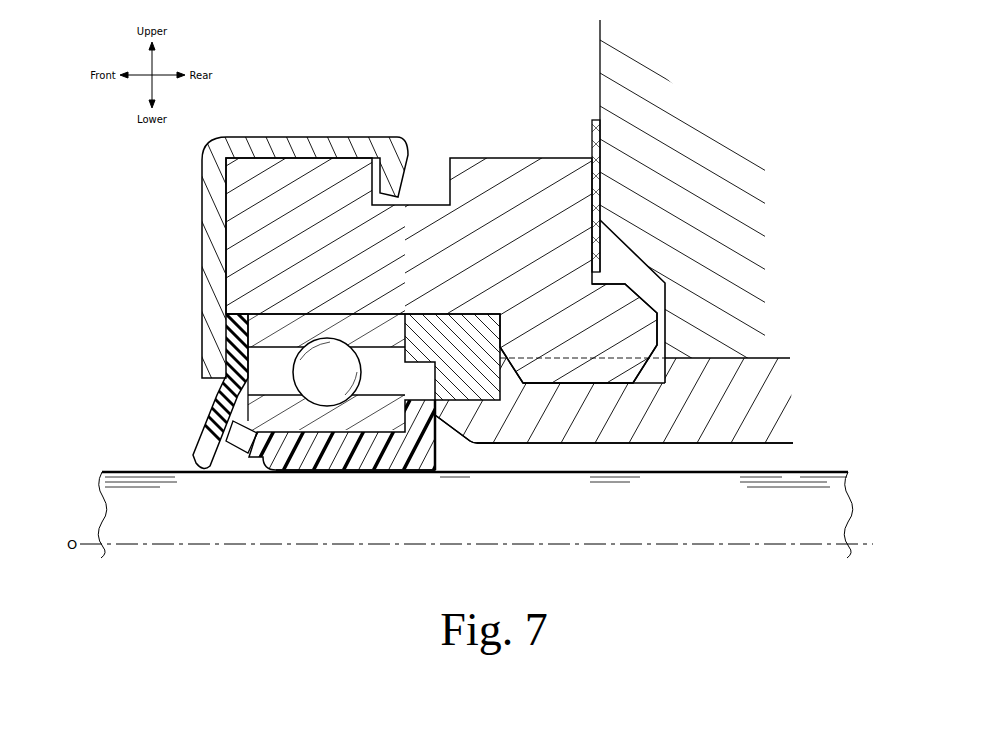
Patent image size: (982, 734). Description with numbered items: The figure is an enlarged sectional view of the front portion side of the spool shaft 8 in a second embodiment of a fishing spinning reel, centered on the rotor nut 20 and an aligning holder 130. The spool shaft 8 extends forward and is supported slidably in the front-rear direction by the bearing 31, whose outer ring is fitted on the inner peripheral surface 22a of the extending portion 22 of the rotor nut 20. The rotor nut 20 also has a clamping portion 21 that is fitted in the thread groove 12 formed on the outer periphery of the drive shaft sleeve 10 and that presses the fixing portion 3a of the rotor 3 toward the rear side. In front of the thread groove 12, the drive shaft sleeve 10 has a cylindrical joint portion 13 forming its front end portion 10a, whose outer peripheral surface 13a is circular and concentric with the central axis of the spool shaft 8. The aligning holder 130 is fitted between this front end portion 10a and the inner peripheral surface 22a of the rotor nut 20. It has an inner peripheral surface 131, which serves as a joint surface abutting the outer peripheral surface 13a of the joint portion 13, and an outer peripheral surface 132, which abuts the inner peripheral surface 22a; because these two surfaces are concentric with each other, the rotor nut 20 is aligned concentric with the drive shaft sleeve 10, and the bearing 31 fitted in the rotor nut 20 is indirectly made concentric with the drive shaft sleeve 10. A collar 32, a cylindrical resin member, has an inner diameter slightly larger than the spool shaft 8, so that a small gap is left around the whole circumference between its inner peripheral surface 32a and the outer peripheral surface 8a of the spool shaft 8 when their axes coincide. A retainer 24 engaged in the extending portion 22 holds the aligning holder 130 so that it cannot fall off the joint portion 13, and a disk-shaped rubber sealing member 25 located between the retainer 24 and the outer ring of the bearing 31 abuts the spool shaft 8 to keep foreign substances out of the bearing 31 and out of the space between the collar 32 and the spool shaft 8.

The rotor 3 is at (681, 228).
The fixing portion 3a is at (703, 203).
The spool shaft 8 is at (475, 495).
The outer peripheral surface of the spool shaft 8a is at (157, 470).
The drive shaft sleeve 10 is at (638, 427).
The front end portion of the drive shaft sleeve 10a is at (541, 445).
The thread groove 12 is at (590, 348).
The joint portion 13 is at (437, 416).
The outer peripheral surface of the joint portion 13a is at (470, 402).
The inner peripheral surface of the aligning holder 131 is at (498, 424).
The aligning holder 130 is at (493, 351).
The outer peripheral surface of the aligning holder 132 is at (470, 312).
The rotor nut 20 is at (445, 268).
The clamping portion 21 is at (512, 227).
The extending portion 22 is at (284, 223).
The inner peripheral surface of the extending portion 22a is at (432, 312).
The retainer 24 is at (320, 137).
The sealing member 25 is at (216, 402).
The bearing 31 is at (258, 312).
The collar 32 is at (316, 462).
The inner peripheral surface of the collar 32a is at (350, 472).